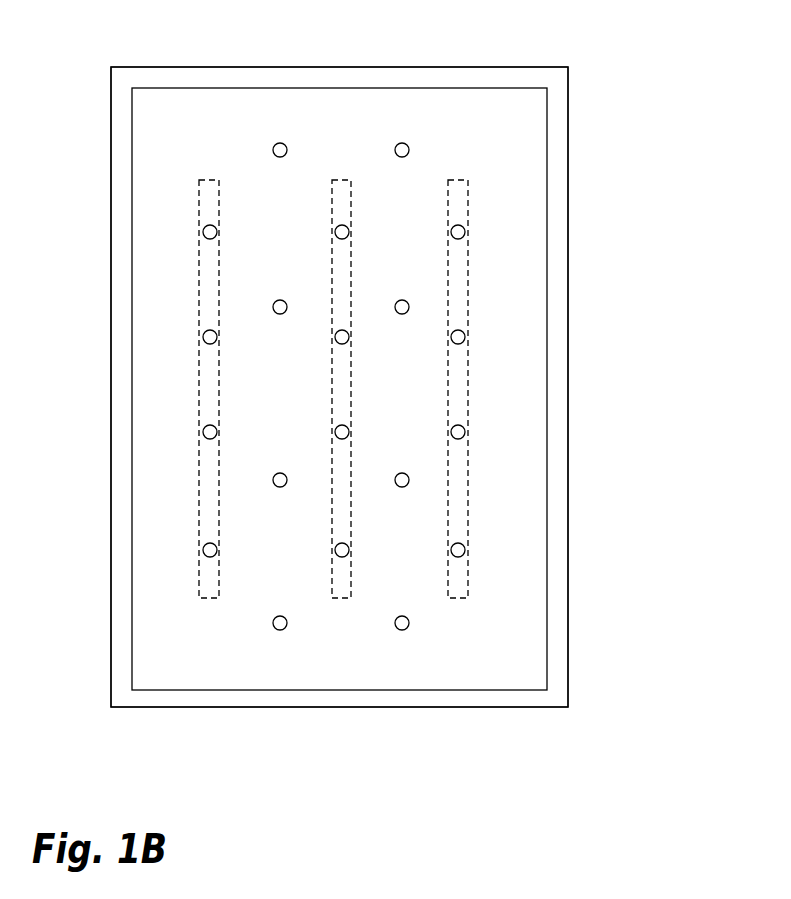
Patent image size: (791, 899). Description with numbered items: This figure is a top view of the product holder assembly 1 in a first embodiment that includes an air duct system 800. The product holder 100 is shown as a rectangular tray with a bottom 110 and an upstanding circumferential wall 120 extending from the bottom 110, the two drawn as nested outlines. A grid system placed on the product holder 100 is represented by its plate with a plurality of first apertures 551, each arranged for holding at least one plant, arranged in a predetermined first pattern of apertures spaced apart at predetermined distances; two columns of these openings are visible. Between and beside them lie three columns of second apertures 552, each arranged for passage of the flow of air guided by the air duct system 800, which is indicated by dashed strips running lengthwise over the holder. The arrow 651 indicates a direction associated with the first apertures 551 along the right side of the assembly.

The product holder assembly 1 is at (417, 391).
The product holder 100 is at (556, 287).
The bottom 110 is at (528, 177).
The upstanding circumferential wall 120 is at (558, 130).
The first apertures 551 is at (274, 145).
The second apertures 552 is at (204, 232).
The direction 651 is at (681, 600).
The air duct system 800 is at (455, 575).